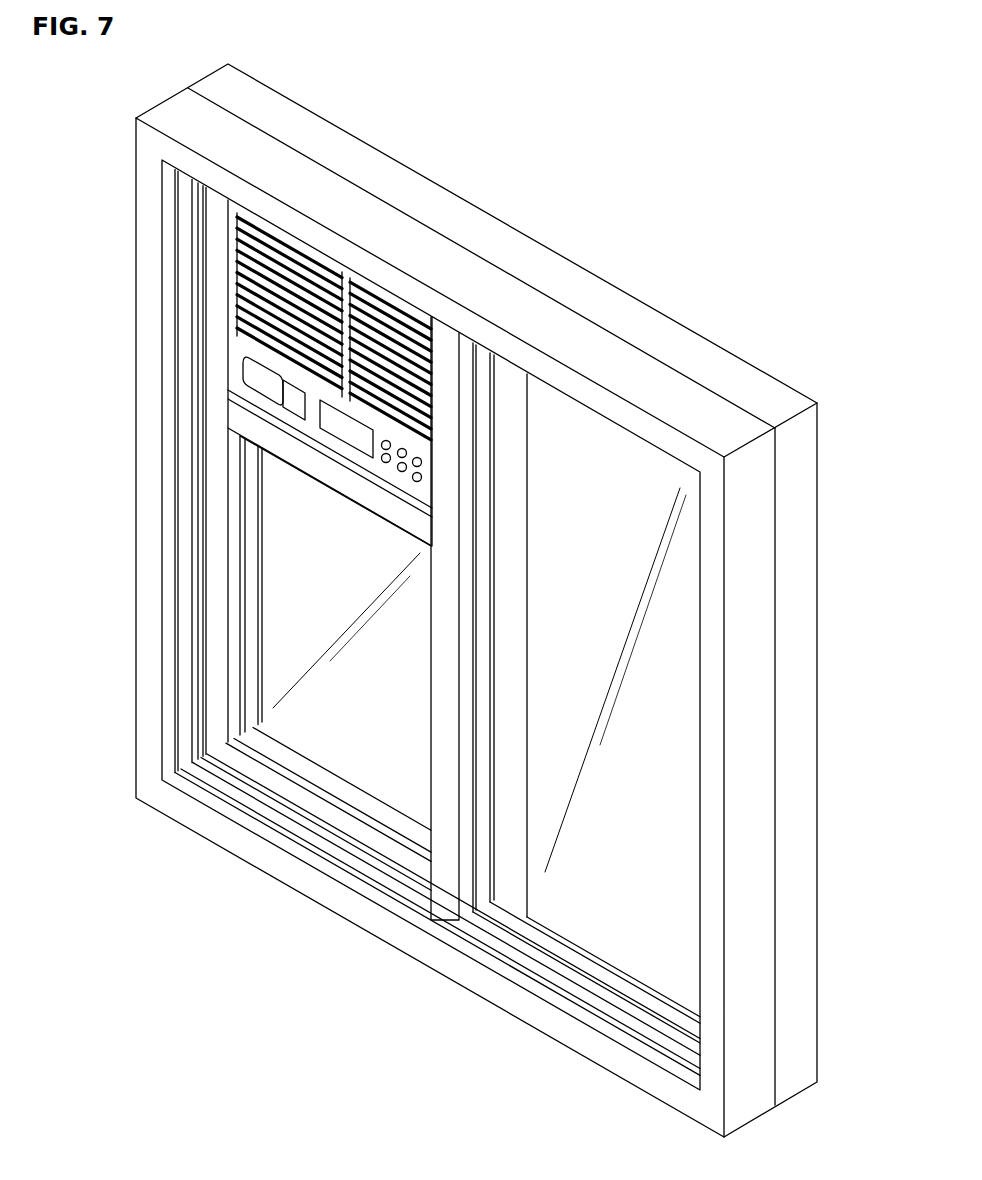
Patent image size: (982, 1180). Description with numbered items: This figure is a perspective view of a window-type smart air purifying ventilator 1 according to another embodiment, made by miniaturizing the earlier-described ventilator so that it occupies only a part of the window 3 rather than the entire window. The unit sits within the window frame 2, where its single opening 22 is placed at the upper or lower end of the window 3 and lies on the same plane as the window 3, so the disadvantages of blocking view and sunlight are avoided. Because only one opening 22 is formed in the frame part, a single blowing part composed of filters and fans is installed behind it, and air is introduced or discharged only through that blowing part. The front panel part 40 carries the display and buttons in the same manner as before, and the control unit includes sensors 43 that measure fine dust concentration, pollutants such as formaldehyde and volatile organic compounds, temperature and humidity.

The smart air purifying ventilator 1 is at (241, 373).
The window frame 2 is at (803, 165).
The window 3 is at (684, 602).
The opening 22 is at (238, 297).
The front panel part 40 is at (225, 353).
The sensors 43 is at (283, 398).